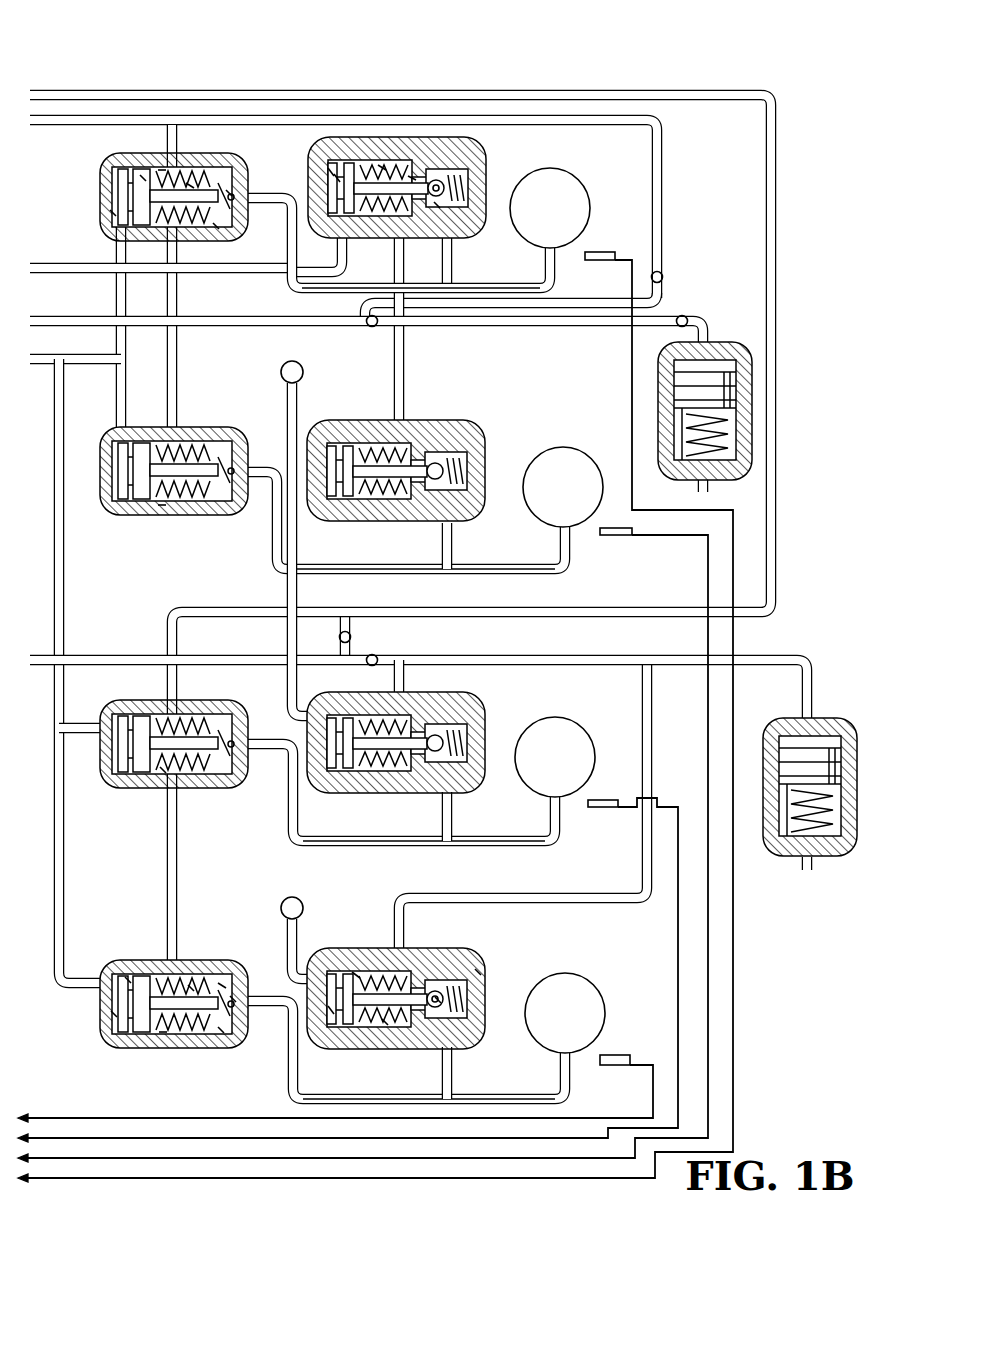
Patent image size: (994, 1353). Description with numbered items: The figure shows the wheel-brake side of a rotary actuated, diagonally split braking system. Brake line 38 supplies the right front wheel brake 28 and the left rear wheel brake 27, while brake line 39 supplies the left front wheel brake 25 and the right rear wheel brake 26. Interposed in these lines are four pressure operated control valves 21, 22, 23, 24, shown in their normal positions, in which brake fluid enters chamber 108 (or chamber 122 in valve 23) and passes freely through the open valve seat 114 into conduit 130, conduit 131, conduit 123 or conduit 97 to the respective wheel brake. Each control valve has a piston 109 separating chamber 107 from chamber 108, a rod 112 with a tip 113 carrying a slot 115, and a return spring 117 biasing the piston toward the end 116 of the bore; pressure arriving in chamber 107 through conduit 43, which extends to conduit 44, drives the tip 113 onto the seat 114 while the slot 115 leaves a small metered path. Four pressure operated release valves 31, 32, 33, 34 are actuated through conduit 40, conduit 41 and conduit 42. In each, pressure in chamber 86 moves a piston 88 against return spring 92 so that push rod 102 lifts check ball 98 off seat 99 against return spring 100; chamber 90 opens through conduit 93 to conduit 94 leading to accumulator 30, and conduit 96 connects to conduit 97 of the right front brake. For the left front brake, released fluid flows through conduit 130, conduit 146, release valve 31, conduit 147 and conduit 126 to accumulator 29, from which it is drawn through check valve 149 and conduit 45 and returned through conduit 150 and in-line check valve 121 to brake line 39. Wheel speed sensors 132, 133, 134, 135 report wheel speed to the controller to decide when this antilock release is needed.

The pressure operated control valve 21 is at (98, 210).
The pressure operated control valve 22 is at (121, 520).
The pressure operated control valve 23 is at (110, 790).
The pressure operated control valve 24 is at (110, 1050).
The left front wheel brake 25 is at (572, 180).
The right rear wheel brake 26 is at (569, 450).
The left rear wheel brake 27 is at (577, 730).
The right front wheel brake 28 is at (588, 985).
The accumulator 29 is at (731, 342).
The accumulator assembly 30 is at (826, 718).
The pressure operated release valve 31 is at (489, 160).
The pressure operated release valve 32 is at (477, 417).
The pressure operated release valve 33 is at (488, 705).
The pressure operated release valve 34 is at (489, 980).
The brake line 38 is at (104, 92).
The brake line 39 is at (52, 124).
The conduit 40 is at (78, 274).
The conduit 41 is at (299, 393).
The conduit 42 is at (298, 928).
The conduit 43 is at (56, 790).
The conduit 44 is at (48, 364).
The conduit 45 is at (85, 326).
The chamber 86 is at (330, 172).
The piston 88 is at (337, 178).
The chamber 90 is at (385, 1022).
The return spring 92 is at (382, 168).
The conduit 93 is at (391, 898).
The conduit 94 is at (669, 668).
The conduit 96 is at (453, 1072).
The conduit 97 is at (572, 1092).
The check ball 98 is at (440, 184).
The seat 99 is at (437, 205).
The return spring 100 is at (478, 972).
The push rod 102 is at (412, 178).
The chamber 107 is at (114, 1014).
The chamber 108 is at (162, 170).
The piston 109 is at (143, 178).
The rod 112 is at (191, 988).
The tip 113 is at (216, 226).
The valve seat 114 is at (242, 194).
The slot 115 is at (229, 192).
The end 116 is at (113, 213).
The return spring 117 is at (190, 185).
The in-line check valve 121 is at (662, 270).
The chamber 122 is at (163, 770).
The conduit 123 is at (335, 845).
The conduit 126 is at (493, 321).
The conduit 130 is at (310, 290).
The conduit 131 is at (370, 576).
The wheel speed sensor 132 is at (612, 252).
The wheel speed sensor 133 is at (618, 537).
The wheel speed sensor 134 is at (604, 808).
The wheel speed sensor 135 is at (624, 1054).
The conduit 146 is at (452, 268).
The conduit 147 is at (392, 244).
The check valve 149 is at (686, 316).
The conduit 150 is at (443, 306).